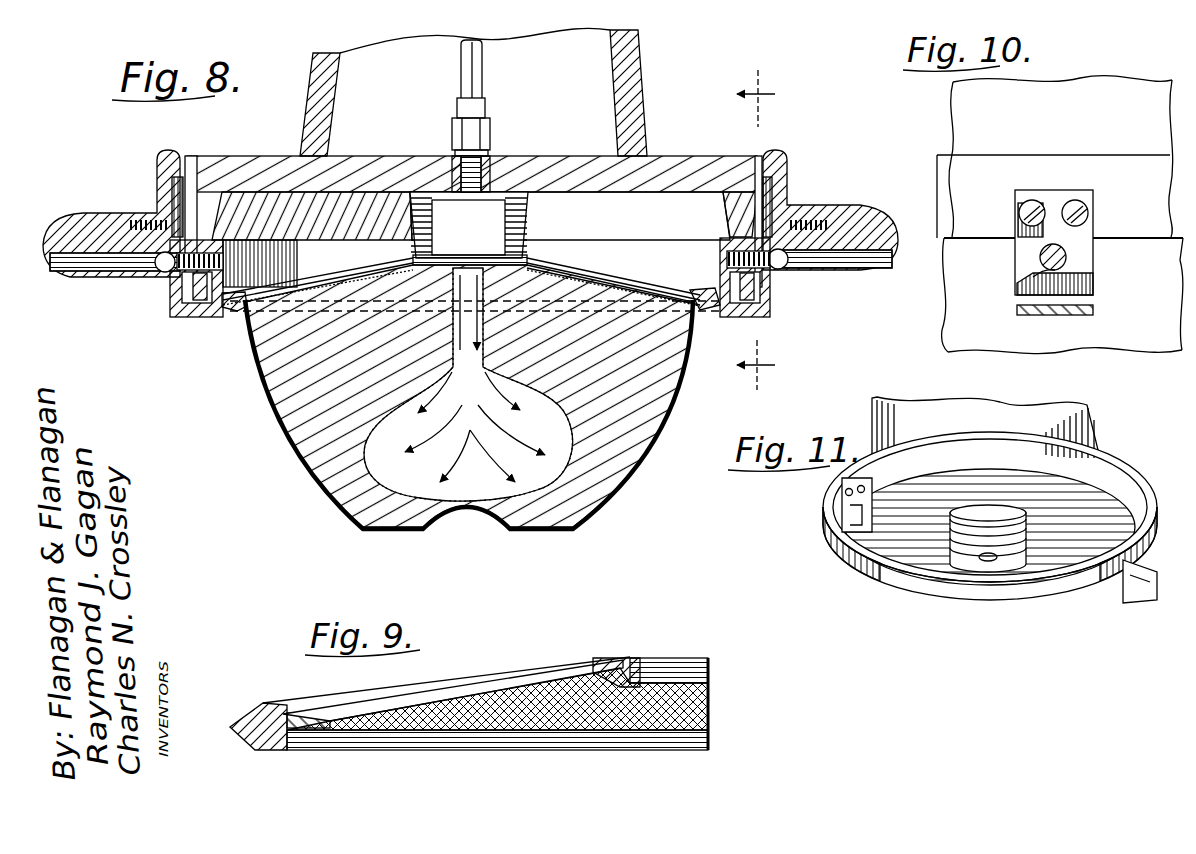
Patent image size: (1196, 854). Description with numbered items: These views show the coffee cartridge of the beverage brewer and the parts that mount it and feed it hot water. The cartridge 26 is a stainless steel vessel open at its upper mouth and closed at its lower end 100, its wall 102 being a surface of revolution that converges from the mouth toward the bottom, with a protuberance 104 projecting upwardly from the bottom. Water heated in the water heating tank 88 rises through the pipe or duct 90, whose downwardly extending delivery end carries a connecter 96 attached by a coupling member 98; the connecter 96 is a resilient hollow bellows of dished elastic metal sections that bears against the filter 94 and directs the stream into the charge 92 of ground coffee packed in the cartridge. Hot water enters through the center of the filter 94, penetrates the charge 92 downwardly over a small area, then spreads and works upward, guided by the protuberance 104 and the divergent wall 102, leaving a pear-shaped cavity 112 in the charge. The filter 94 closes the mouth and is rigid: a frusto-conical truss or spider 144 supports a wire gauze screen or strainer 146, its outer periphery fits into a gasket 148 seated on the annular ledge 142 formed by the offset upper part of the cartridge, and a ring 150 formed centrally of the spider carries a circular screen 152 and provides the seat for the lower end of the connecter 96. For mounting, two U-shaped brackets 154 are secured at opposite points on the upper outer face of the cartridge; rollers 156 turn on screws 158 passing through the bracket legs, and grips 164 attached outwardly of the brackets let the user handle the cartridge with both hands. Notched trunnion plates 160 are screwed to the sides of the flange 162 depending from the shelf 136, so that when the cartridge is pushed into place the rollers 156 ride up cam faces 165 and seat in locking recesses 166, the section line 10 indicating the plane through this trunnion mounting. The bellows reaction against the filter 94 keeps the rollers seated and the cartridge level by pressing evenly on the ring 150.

In FIG. 8, the section line 10 is at (521, 230).
In FIG. 8, the cartridge 26 is at (290, 453).
In FIG. 8, the water heating tank 88 is at (632, 70).
In FIG. 11, the water heating tank 88 is at (1063, 418).
In FIG. 8, the pipe or duct 90 is at (482, 67).
In FIG. 8, the charge of beverage-producing ingredient 92 is at (303, 390).
In FIG. 8, the filter 94 is at (347, 270).
In FIG. 9, the filter 94 is at (510, 675).
In FIG. 8, the connecter 96 is at (525, 207).
In FIG. 11, the connecter 96 is at (958, 556).
In FIG. 8, the coupling member 98 is at (490, 132).
In FIG. 8, the closed lower end 100 is at (547, 533).
In FIG. 8, the wall 102 is at (603, 493).
In FIG. 8, the protuberance 104 is at (463, 513).
In FIG. 8, the pear-shaped cavity 112 is at (365, 530).
In FIG. 8, the shelf 136 is at (677, 162).
In FIG. 10, the shelf 136 is at (1003, 153).
In FIG. 8, the annular ledge 142 is at (232, 308).
In FIG. 8, the truss or spider 144 is at (303, 283).
In FIG. 9, the truss or spider 144 is at (443, 695).
In FIG. 8, the screen or strainer 146 is at (557, 270).
In FIG. 9, the screen or strainer 146 is at (560, 680).
In FIG. 8, the gasket 148 is at (687, 290).
In FIG. 9, the gasket 148 is at (260, 705).
In FIG. 8, the ring 150 is at (437, 260).
In FIG. 9, the ring 150 is at (653, 663).
In FIG. 8, the circular screen 152 is at (512, 250).
In FIG. 9, the circular screen 152 is at (702, 675).
In FIG. 8, the U-shaped brackets 154 is at (173, 303).
In FIG. 8, the rollers 156 is at (190, 313).
In FIG. 10, the rollers 156 is at (1043, 257).
In FIG. 8, the screws 158 is at (167, 273).
In FIG. 10, the screws 158 is at (1067, 260).
In FIG. 8, the trunnion plates 160 is at (199, 156).
In FIG. 10, the trunnion plates 160 is at (1053, 193).
In FIG. 11, the trunnion plates 160 is at (845, 565).
In FIG. 8, the flange 162 is at (217, 210).
In FIG. 10, the flange 162 is at (1142, 160).
In FIG. 11, the flange 162 is at (1087, 475).
In FIG. 8, the grips 164 is at (95, 213).
In FIG. 10, the cam faces 165 is at (1033, 277).
In FIG. 10, the locking recesses 166 is at (1093, 283).